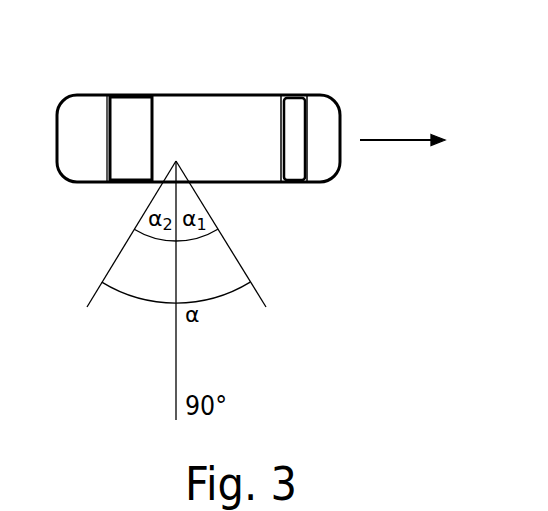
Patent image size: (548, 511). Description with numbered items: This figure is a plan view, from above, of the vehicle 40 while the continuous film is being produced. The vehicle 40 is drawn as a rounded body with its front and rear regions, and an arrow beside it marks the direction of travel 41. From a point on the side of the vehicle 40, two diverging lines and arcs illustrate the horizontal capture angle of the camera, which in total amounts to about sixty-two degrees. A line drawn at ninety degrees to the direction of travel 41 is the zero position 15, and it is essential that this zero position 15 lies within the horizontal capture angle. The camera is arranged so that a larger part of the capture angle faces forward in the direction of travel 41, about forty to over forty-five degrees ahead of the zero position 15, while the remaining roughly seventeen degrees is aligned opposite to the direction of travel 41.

The vehicle 40 is at (203, 105).
The direction of travel 41 is at (402, 124).
The zero position 15 is at (176, 362).